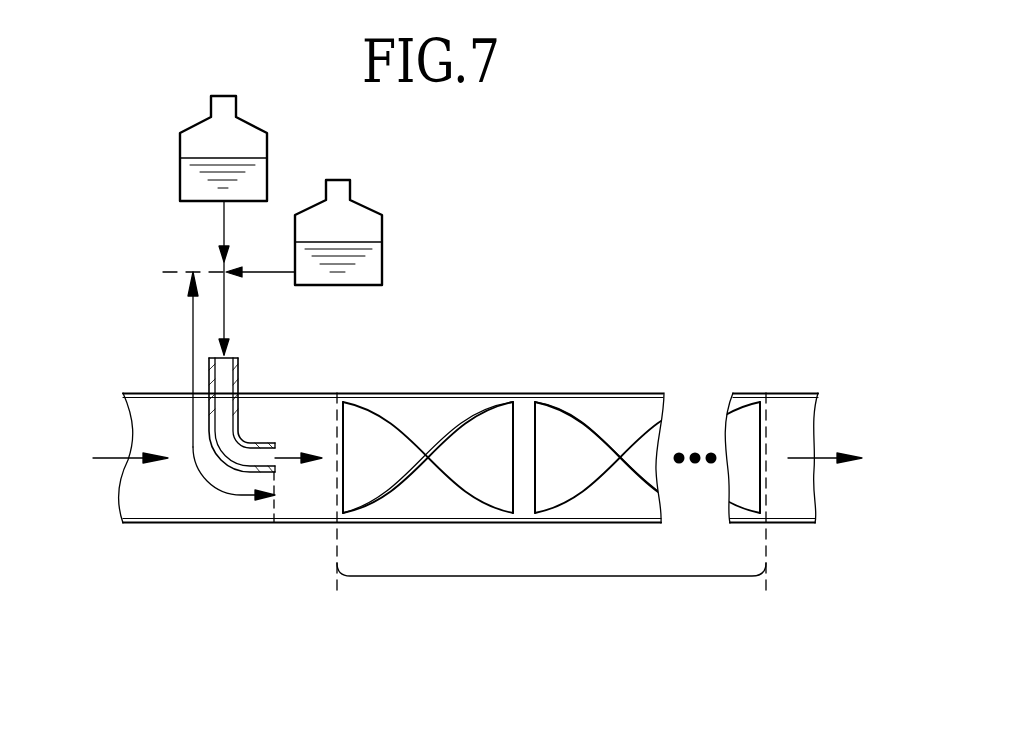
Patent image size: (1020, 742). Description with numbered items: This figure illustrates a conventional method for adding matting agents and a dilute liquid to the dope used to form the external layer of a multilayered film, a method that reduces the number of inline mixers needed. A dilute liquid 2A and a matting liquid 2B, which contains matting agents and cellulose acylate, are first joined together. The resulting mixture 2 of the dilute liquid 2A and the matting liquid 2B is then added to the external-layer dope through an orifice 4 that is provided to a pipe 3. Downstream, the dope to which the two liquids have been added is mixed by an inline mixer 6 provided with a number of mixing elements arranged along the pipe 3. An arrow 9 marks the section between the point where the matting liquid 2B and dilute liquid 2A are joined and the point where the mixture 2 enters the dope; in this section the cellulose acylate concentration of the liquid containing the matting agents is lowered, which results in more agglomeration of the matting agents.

The mixture 2 is at (228, 383).
The dilute liquid 2A is at (190, 190).
The matting liquid 2B is at (375, 263).
The pipe 3 is at (445, 372).
The orifice 4 is at (274, 455).
The inline mixer 6 is at (548, 577).
The arrow 9 is at (191, 343).